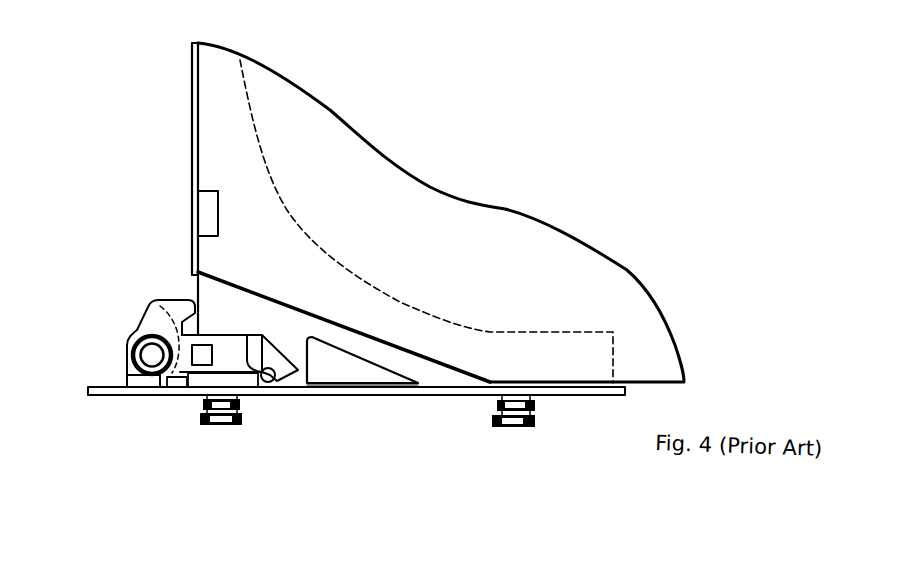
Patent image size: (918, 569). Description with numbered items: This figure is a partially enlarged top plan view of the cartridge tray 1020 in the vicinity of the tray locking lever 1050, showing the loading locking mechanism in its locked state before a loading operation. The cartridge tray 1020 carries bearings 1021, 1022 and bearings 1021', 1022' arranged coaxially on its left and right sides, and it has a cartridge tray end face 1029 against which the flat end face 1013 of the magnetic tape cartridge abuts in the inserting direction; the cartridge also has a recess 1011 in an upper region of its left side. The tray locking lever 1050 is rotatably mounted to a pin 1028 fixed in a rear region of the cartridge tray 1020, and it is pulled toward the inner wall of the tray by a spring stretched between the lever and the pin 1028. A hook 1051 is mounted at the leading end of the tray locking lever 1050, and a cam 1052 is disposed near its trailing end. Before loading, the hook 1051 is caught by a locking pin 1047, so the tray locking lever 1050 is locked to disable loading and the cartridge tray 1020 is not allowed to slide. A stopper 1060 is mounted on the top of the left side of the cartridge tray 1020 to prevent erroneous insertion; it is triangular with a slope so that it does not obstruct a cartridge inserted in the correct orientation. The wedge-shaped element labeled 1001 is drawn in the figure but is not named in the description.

The cartridge tray end face 1029 is at (192, 103).
The end face 1013 is at (192, 160).
The recess 1011 is at (222, 278).
The tray locking lever 1050 is at (232, 347).
The hook 1051 is at (268, 342).
The locking pin 1047 is at (268, 382).
The wedge 1001 is at (368, 359).
The stopper 1060 is at (358, 372).
The cam 1052 is at (172, 300).
The pin 1028 is at (132, 355).
The cartridge tray 1020 is at (437, 396).
The bearing 1021' is at (171, 427).
The bearing 1021 is at (220, 454).
The bearing 1022' is at (566, 428).
The bearing 1022 is at (516, 454).